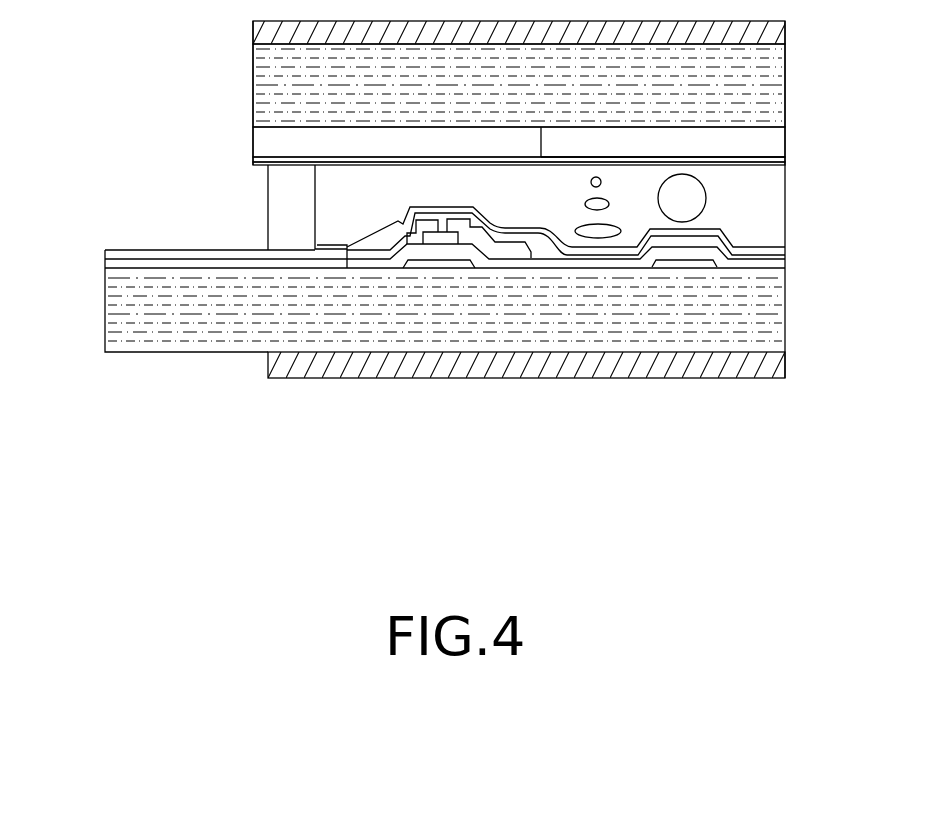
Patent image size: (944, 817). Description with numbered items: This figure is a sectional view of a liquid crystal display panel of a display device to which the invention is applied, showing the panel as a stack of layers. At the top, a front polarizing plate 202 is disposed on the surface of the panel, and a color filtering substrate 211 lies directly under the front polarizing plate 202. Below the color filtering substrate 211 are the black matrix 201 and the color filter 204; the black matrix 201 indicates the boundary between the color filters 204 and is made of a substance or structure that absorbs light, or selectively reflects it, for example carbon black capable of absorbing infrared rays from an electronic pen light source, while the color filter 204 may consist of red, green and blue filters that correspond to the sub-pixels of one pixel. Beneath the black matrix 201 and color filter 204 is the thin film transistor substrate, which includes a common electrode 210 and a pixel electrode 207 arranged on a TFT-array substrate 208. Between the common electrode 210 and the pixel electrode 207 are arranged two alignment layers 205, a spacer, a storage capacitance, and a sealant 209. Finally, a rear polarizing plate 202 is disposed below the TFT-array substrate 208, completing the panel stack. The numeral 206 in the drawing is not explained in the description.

The black matrix 201 is at (270, 146).
The polarizing plate 202 is at (268, 46).
The color filter 204 is at (778, 147).
The alignment layers 205 is at (786, 162).
The lower electrode 206 is at (682, 270).
The pixel electrode 207 is at (786, 265).
The TFT-array substrate 208 is at (118, 308).
The sealant 209 is at (268, 208).
The common electrode 210 is at (262, 162).
The color filtering substrate 211 is at (270, 92).